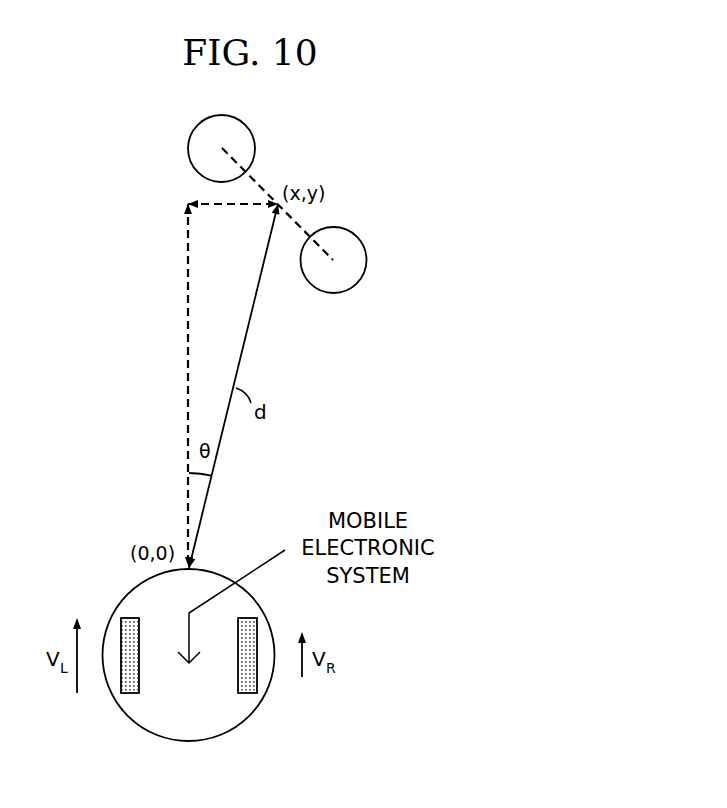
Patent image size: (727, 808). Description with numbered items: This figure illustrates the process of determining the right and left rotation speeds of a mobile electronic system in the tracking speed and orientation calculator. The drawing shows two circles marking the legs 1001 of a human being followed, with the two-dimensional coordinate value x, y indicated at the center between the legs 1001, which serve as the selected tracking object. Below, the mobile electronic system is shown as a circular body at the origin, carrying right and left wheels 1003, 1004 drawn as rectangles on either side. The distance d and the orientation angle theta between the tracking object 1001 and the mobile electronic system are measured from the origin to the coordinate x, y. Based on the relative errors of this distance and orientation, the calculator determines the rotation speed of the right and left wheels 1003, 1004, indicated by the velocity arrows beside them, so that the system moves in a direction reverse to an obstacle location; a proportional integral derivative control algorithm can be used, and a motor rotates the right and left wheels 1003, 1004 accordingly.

The leg 1001 is at (255, 148).
The right wheel 1003 is at (122, 692).
The left wheel 1004 is at (256, 692).